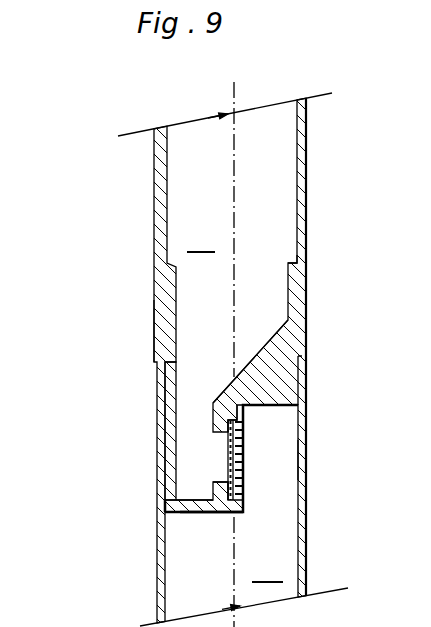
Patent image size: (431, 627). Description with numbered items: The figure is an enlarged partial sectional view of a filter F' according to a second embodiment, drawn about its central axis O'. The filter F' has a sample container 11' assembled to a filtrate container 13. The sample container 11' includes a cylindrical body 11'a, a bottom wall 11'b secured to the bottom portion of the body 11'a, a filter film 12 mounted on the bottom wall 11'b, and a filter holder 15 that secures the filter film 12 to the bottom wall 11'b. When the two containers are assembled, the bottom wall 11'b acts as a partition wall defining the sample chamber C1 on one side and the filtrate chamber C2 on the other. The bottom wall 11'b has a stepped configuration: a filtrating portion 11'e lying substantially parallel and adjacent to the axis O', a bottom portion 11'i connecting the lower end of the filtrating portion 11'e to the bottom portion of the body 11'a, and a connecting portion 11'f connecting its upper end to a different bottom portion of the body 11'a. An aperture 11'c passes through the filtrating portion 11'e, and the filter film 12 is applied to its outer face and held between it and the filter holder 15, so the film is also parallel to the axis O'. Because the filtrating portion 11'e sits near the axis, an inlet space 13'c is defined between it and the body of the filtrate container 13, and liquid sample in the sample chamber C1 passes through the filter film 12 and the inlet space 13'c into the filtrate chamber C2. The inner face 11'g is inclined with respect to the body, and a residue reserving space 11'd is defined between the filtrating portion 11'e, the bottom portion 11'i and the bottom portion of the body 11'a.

The axis O' is at (314, 354).
The sample container 11' is at (223, 360).
The cylindrical body 11'a is at (352, 268).
The inner face 11'g is at (315, 355).
The connecting portion 11'f is at (354, 374).
The filtrating portion 11'e is at (151, 413).
The aperture 11'c is at (147, 490).
The bottom portion 11'i is at (116, 517).
The residue reserving space 11'd is at (139, 532).
The bottom wall 11'b is at (155, 567).
The filter film 12 is at (222, 447).
The filtrate container 13 is at (242, 513).
The inlet space 13'c is at (342, 486).
The filter holder 15 is at (247, 447).
The filter F' is at (92, 331).
The sample chamber C1 is at (203, 238).
The filtrate chamber C2 is at (268, 567).